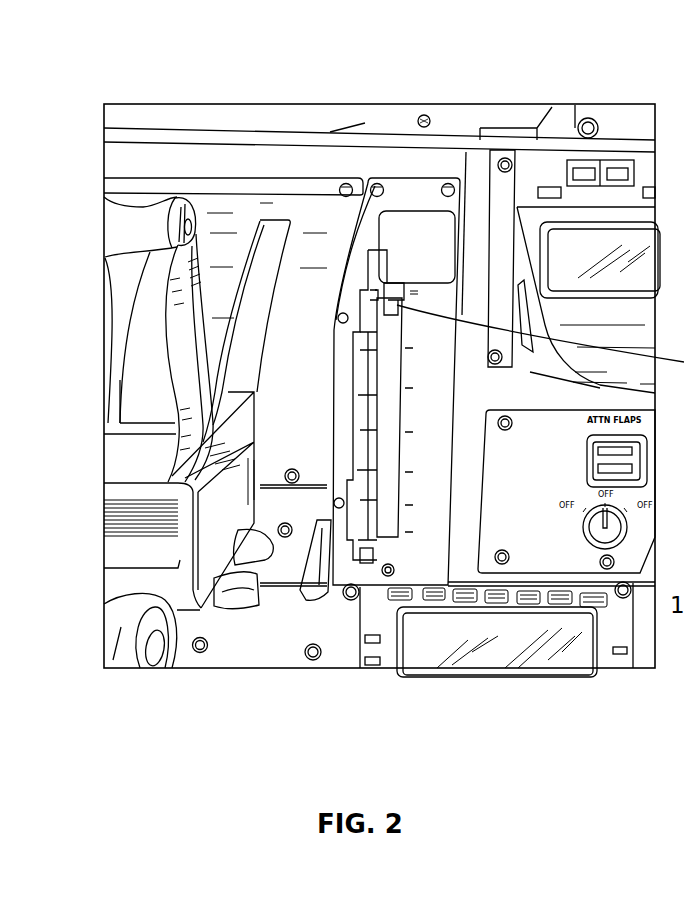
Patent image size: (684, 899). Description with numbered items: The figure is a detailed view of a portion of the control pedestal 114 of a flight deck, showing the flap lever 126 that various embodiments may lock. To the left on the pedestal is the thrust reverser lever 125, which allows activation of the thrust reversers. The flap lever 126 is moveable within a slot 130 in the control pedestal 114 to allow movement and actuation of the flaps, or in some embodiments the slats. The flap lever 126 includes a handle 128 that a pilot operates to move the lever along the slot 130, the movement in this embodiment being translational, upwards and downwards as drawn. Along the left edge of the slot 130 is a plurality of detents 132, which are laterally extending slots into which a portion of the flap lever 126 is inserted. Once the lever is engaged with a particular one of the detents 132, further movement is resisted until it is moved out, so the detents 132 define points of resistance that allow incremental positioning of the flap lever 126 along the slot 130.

The control pedestal 114 is at (310, 688).
The thrust reverser lever 125 is at (110, 224).
The flap lever 126 is at (403, 200).
The handle 128 is at (418, 223).
The slot 130 is at (393, 550).
The detents 132 is at (342, 394).